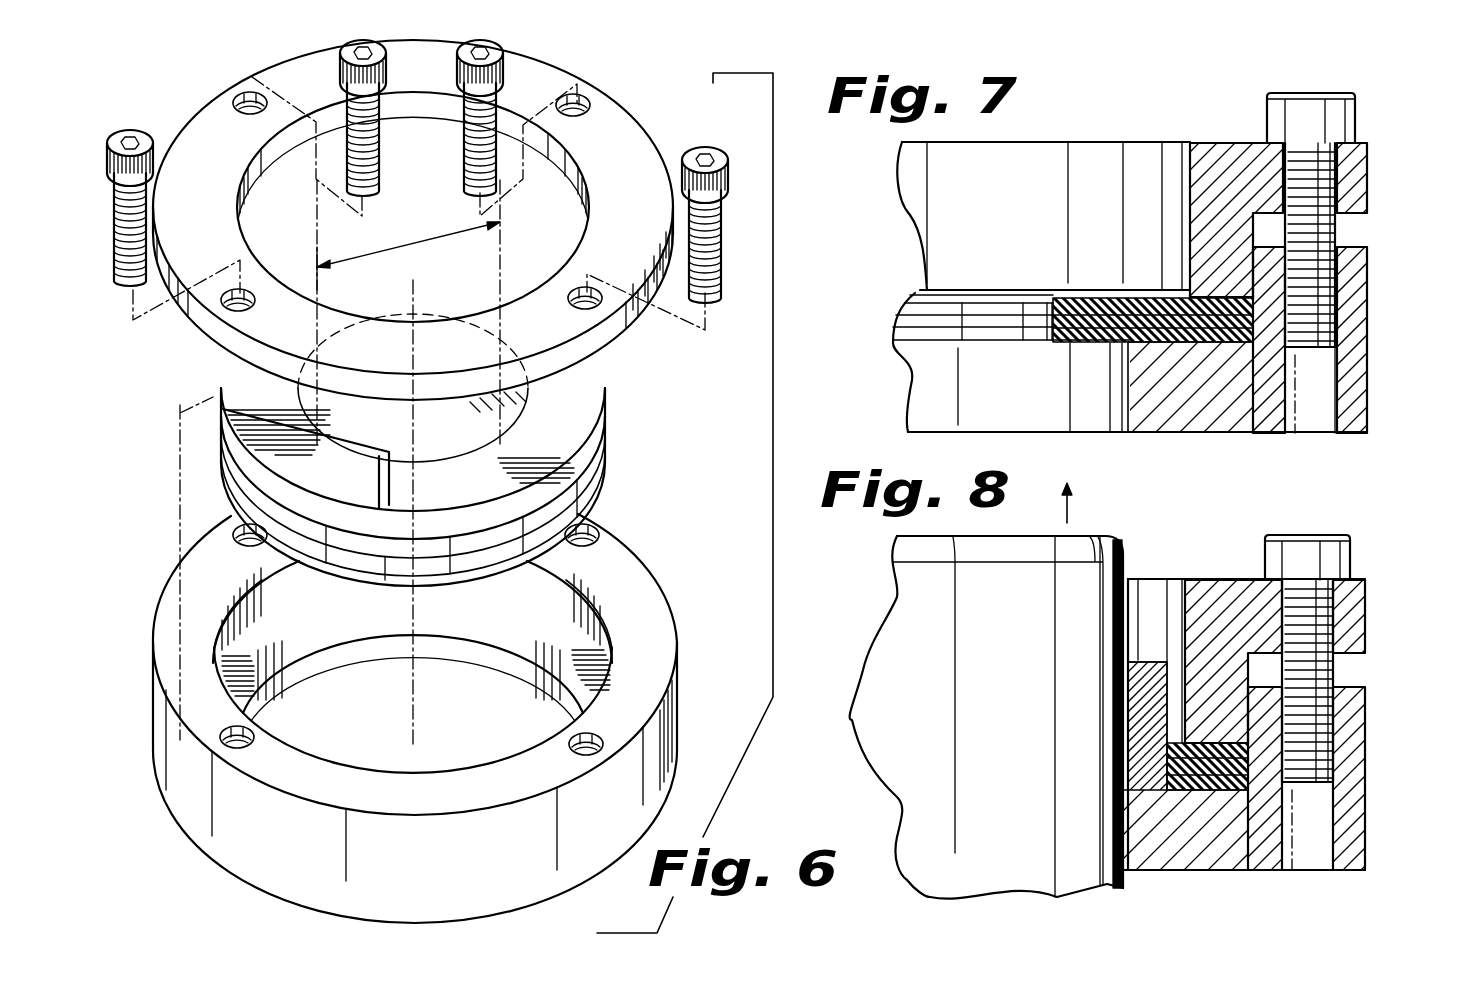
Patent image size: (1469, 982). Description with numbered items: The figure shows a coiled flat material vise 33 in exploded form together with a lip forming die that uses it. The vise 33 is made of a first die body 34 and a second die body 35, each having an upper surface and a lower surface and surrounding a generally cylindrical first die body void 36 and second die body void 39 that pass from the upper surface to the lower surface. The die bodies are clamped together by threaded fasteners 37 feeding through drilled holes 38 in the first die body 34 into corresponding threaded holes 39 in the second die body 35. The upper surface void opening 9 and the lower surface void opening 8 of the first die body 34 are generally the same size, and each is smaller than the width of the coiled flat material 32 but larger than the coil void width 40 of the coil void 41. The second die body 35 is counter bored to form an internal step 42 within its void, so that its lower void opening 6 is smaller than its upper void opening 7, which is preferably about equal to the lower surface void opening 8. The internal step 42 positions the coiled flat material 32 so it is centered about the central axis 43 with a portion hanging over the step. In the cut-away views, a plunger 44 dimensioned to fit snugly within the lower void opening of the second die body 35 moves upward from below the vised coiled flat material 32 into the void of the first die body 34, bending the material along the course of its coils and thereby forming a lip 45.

In FIG. 6, the lower void opening 6 is at (268, 664).
In FIG. 6, the upper void opening 7 is at (270, 569).
In FIG. 6, the lower surface void opening 8 is at (582, 222).
In FIG. 6, the upper surface void opening 9 is at (582, 188).
In FIG. 6, the coiled flat material 32 is at (625, 414).
In FIG. 7, the coiled flat material 32 is at (1190, 357).
In FIG. 8, the coiled flat material 32 is at (1162, 788).
In FIG. 6, the coiled flat material vise 33 is at (668, 119).
In FIG. 6, the first die body 34 is at (622, 330).
In FIG. 7, the first die body 34 is at (1370, 175).
In FIG. 8, the first die body 34 is at (1368, 630).
In FIG. 6, the second die body 35 is at (672, 603).
In FIG. 7, the second die body 35 is at (1370, 318).
In FIG. 8, the second die body 35 is at (1365, 737).
In FIG. 6, the first die body void 36 is at (268, 240).
In FIG. 7, the first die body void 36 is at (1140, 172).
In FIG. 8, the first die body void 36 is at (1178, 562).
In FIG. 6, the threaded fasteners 37 is at (462, 178).
In FIG. 7, the threaded fasteners 37 is at (1350, 118).
In FIG. 8, the threaded fasteners 37 is at (1348, 560).
In FIG. 6, the drilled holes 38 is at (582, 100).
In FIG. 6, the second die body void 39 is at (598, 523).
In FIG. 6, the coil void width 40 is at (413, 246).
In FIG. 6, the coil void 41 is at (483, 450).
In FIG. 6, the internal step 42 is at (570, 619).
In FIG. 7, the internal step 42 is at (1215, 338).
In FIG. 8, the internal step 42 is at (1215, 790).
In FIG. 6, the central axis 43 is at (414, 744).
In FIG. 8, the plunger 44 is at (890, 616).
In FIG. 8, the lip 45 is at (1140, 665).